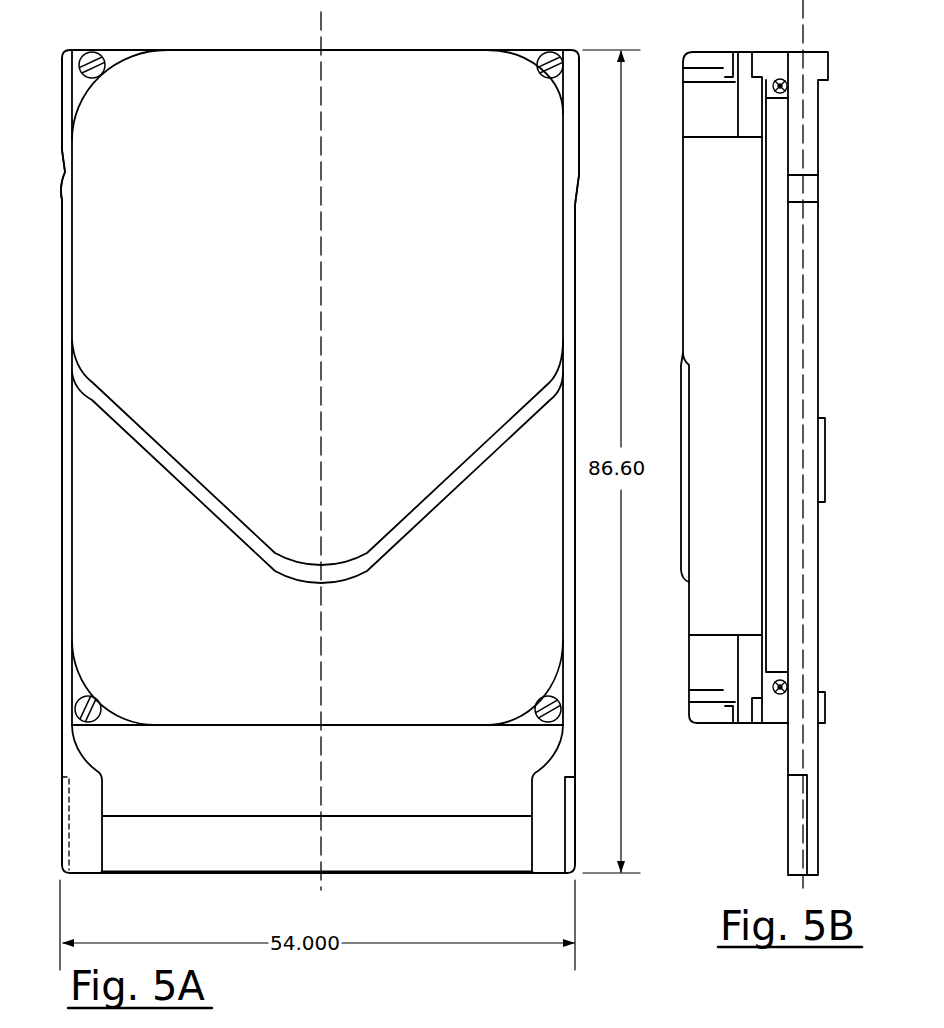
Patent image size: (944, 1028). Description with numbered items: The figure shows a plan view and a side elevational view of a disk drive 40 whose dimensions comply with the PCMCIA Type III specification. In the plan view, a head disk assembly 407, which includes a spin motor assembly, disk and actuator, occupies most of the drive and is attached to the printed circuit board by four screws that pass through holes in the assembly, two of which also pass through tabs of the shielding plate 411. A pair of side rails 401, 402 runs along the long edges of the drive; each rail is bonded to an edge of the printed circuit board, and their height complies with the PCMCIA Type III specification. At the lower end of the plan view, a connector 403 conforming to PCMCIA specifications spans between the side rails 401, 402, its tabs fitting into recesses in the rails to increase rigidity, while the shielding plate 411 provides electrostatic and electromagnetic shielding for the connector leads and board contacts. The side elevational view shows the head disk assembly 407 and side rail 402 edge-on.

In FIG. 5A, the disk drive 40 is at (371, 46).
In FIG. 5A, the side rail 401 is at (62, 255).
In FIG. 5A, the side rail 402 is at (578, 300).
In FIG. 5B, the side rail 402 is at (808, 370).
In FIG. 5A, the connector 403 is at (245, 858).
In FIG. 5A, the head disk assembly 407 is at (255, 49).
In FIG. 5B, the head disk assembly 407 is at (708, 293).
In FIG. 5A, the shielding plate 411 is at (273, 742).